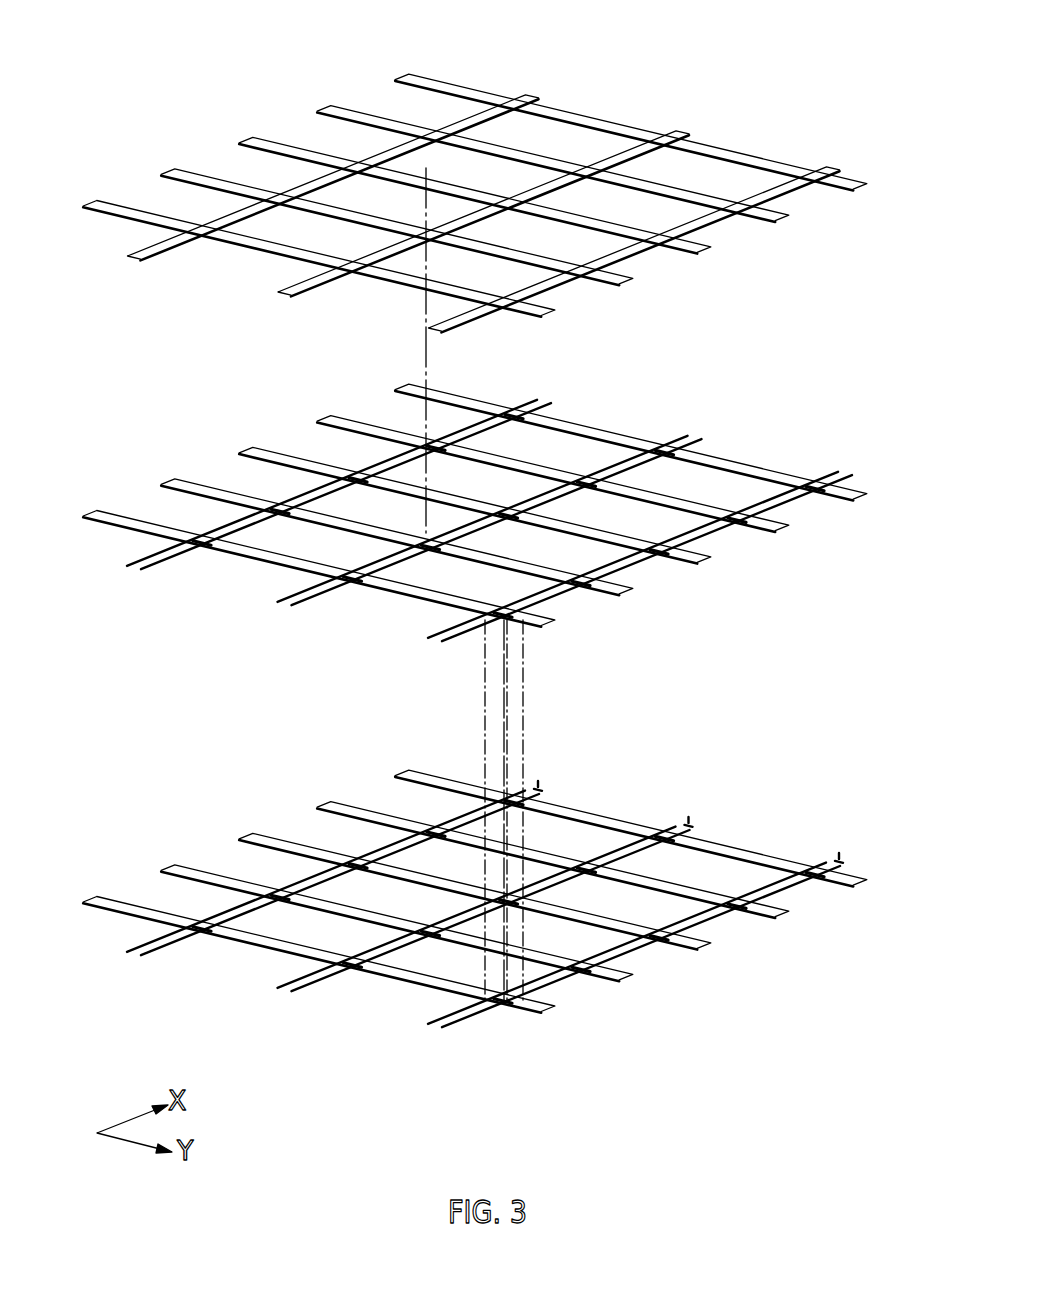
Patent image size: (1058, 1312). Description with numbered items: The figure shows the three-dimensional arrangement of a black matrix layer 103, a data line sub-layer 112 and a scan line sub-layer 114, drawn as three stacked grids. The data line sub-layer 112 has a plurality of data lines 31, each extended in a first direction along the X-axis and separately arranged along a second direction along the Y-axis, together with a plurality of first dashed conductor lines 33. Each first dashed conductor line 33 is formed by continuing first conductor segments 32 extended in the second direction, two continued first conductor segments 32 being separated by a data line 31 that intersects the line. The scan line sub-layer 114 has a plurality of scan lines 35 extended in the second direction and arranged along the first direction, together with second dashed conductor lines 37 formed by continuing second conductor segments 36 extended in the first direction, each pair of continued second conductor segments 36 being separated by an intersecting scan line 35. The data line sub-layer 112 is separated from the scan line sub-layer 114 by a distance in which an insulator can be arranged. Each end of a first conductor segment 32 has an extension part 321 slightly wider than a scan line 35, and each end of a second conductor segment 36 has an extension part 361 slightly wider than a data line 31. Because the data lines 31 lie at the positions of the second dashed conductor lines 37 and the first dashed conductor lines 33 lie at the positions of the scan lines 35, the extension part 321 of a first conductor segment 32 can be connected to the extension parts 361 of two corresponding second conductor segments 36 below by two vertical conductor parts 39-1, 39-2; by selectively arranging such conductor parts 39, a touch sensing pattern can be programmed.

The black matrix layer 103 is at (743, 108).
The data line sub-layer 112 is at (475, 485).
The scan line sub-layer 114 is at (475, 868).
The data line 31 is at (678, 448).
The first conductor segment 32 is at (610, 438).
The extension part 321 is at (501, 611).
The first dashed conductor line 33 is at (246, 448).
The scan line 35 is at (241, 835).
The second conductor segment 36 is at (616, 850).
The extension part 361 is at (531, 999).
The second dashed conductor line 37 is at (693, 826).
The conductor part 39 is at (504, 811).
The conductor part 39-1 is at (485, 732).
The conductor part 39-2 is at (503, 698).